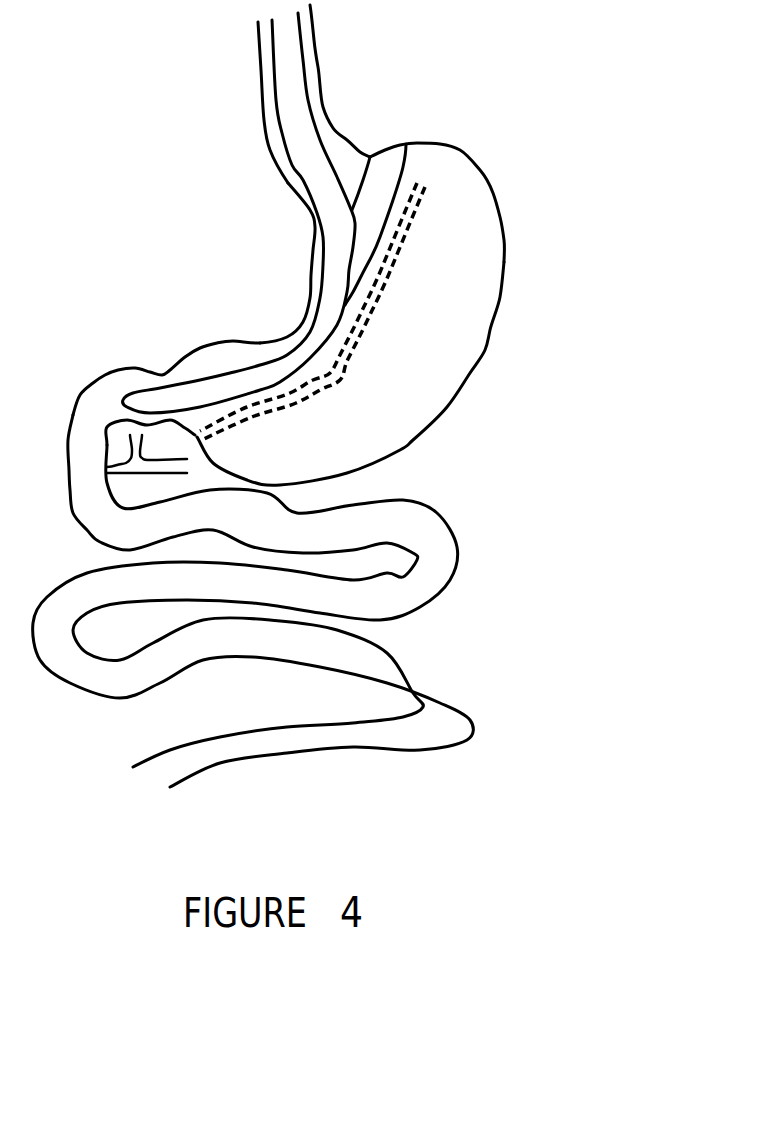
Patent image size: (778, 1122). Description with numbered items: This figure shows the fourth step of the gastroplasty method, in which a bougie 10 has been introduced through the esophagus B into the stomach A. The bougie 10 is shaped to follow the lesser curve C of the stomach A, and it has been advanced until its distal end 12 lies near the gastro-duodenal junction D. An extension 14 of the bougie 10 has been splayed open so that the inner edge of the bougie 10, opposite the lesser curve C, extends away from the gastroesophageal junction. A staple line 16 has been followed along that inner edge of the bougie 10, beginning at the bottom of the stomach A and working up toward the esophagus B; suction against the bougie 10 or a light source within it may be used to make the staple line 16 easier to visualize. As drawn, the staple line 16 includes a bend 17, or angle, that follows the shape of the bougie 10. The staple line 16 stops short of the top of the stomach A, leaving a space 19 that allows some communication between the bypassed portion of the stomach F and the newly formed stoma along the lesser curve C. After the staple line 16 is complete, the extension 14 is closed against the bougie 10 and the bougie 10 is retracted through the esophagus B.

The bougie 10 is at (290, 131).
The distal end 12 is at (130, 393).
The extension 14 is at (393, 163).
The staple line 16 is at (382, 288).
The bend 17 is at (333, 373).
The space 19 is at (430, 165).
The stomach A is at (503, 217).
The esophagus B is at (330, 118).
The lesser curve C is at (313, 272).
The gastro-duodenal junction D is at (163, 373).
The bypassed portion of the stomach F is at (433, 343).